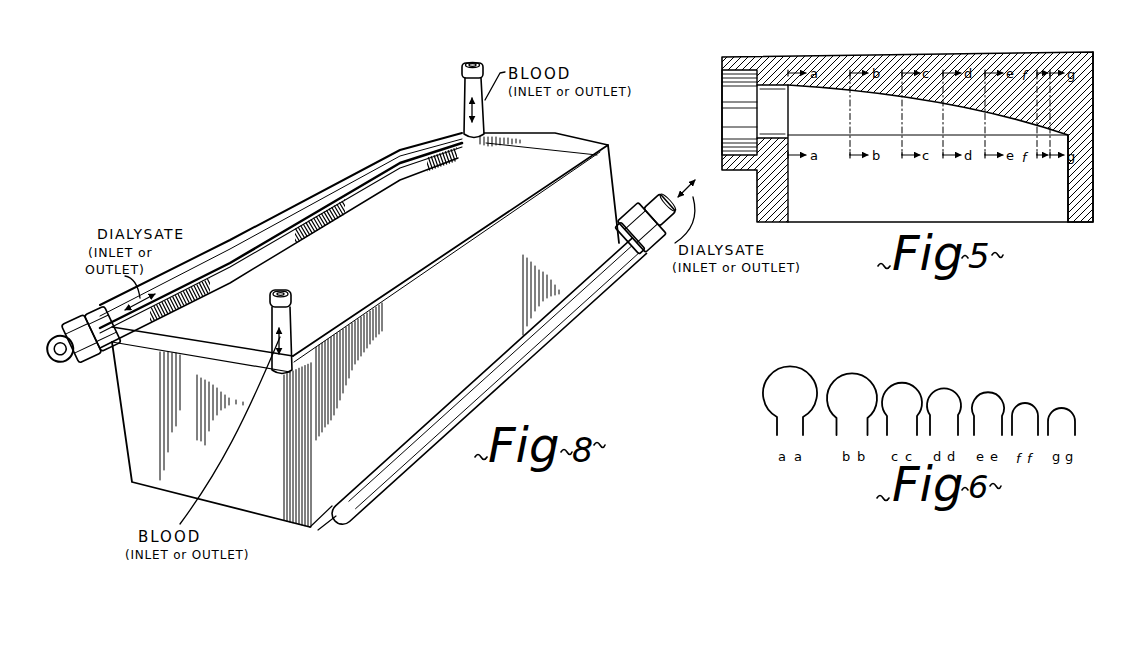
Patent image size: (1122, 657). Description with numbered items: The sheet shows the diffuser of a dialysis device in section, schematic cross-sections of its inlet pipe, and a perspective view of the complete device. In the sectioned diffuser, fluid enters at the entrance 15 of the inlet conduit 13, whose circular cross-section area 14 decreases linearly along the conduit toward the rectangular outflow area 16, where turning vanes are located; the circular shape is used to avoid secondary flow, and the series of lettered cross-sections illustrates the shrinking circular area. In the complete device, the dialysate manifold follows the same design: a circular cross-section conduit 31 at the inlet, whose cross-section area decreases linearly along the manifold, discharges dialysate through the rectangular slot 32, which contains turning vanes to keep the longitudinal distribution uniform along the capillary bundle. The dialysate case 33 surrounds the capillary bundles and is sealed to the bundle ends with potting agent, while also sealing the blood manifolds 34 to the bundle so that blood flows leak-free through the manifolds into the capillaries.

In FIG. 5, the inlet conduit 13 is at (778, 63).
In FIG. 5, the circular cross-section area 14 is at (822, 92).
In FIG. 5, the entrance 15 is at (723, 102).
In FIG. 5, the rectangular outflow area 16 is at (1048, 200).
In FIG. 8, the circular cross-section conduit 31 is at (256, 226).
In FIG. 8, the rectangular slot 32 is at (239, 272).
In FIG. 8, the dialysate case 33 is at (132, 420).
In FIG. 8, the blood manifolds 34 is at (463, 94).